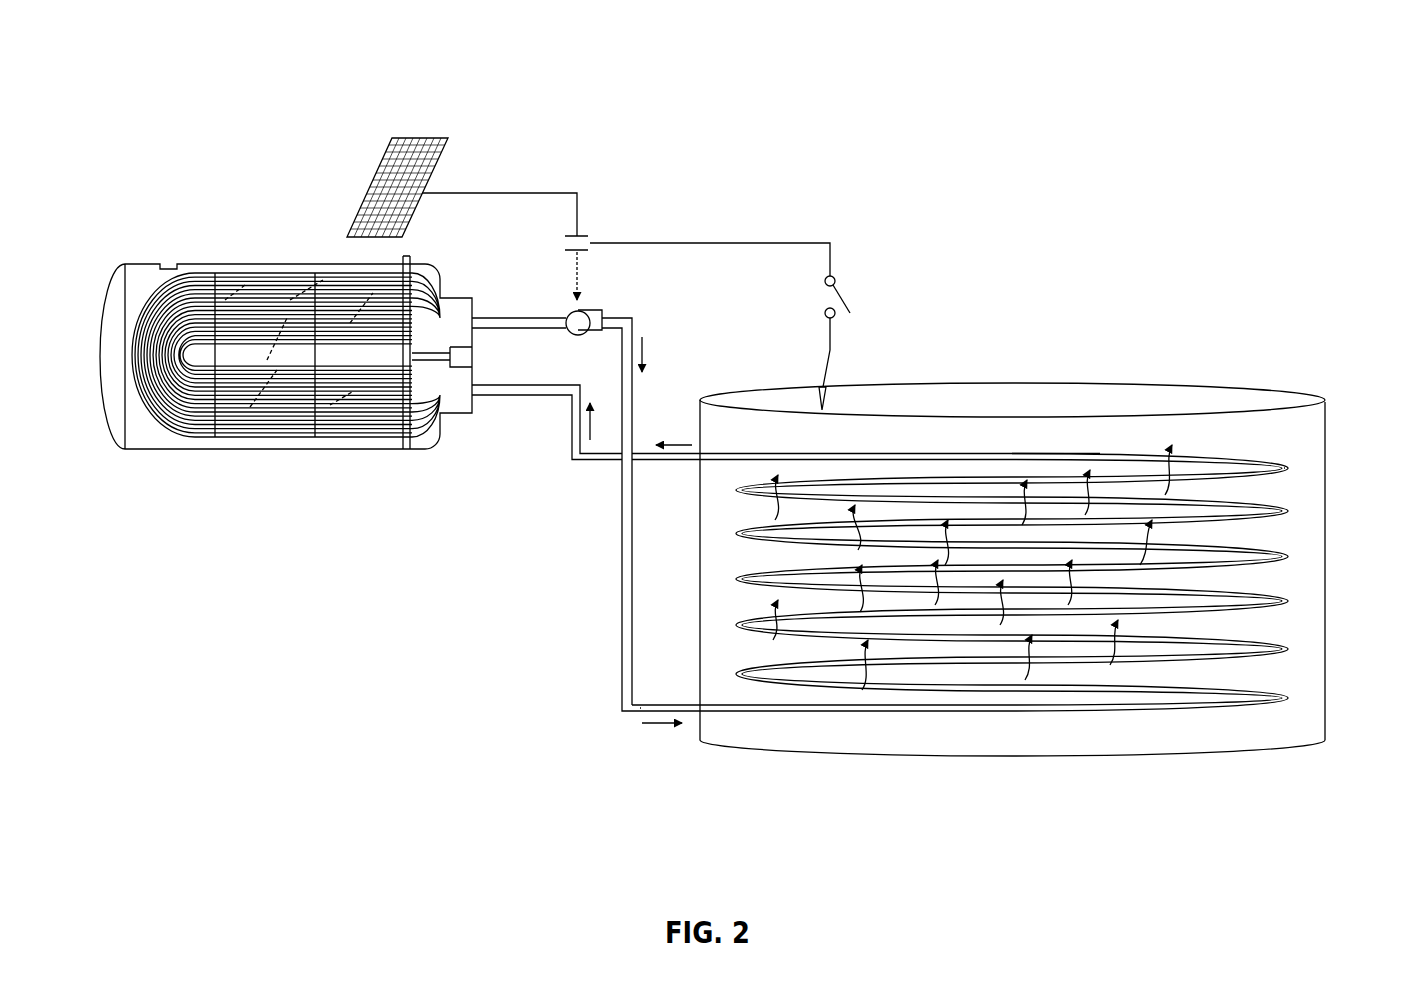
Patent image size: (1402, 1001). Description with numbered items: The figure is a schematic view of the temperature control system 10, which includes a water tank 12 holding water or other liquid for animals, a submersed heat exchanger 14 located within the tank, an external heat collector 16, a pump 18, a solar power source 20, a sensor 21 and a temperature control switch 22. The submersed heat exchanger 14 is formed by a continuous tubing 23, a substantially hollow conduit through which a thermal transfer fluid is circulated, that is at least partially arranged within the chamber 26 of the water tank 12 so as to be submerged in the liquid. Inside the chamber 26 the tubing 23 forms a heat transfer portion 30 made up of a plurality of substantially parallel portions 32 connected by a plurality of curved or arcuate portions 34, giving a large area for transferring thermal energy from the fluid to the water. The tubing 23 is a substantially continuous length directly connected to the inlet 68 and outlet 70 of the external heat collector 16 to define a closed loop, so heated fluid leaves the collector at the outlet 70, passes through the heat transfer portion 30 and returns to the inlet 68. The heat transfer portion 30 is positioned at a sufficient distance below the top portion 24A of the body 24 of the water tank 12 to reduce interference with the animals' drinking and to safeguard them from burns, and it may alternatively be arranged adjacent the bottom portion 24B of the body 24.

The temperature control system 10 is at (1328, 53).
The water tank 12 is at (1207, 385).
The submersed heat exchanger 14 is at (831, 714).
The external heat collector 16 is at (170, 473).
The pump 18 is at (596, 310).
The solar power source 20 is at (440, 121).
The sensor 21 is at (812, 379).
The temperature control switch 22 is at (822, 295).
The continuous tubing 23 is at (882, 452).
The body 24 is at (1212, 752).
The top portion 24A is at (1061, 381).
The bottom portion 24B is at (1200, 758).
The chamber 26 is at (1133, 404).
The heat transfer portion 30 is at (1291, 579).
The substantially parallel portions 32 is at (1242, 452).
The curved or arcuate portions 34 is at (1284, 468).
The inlet of the external heat collector 68 is at (478, 398).
The outlet of the external heat collector 70 is at (475, 316).